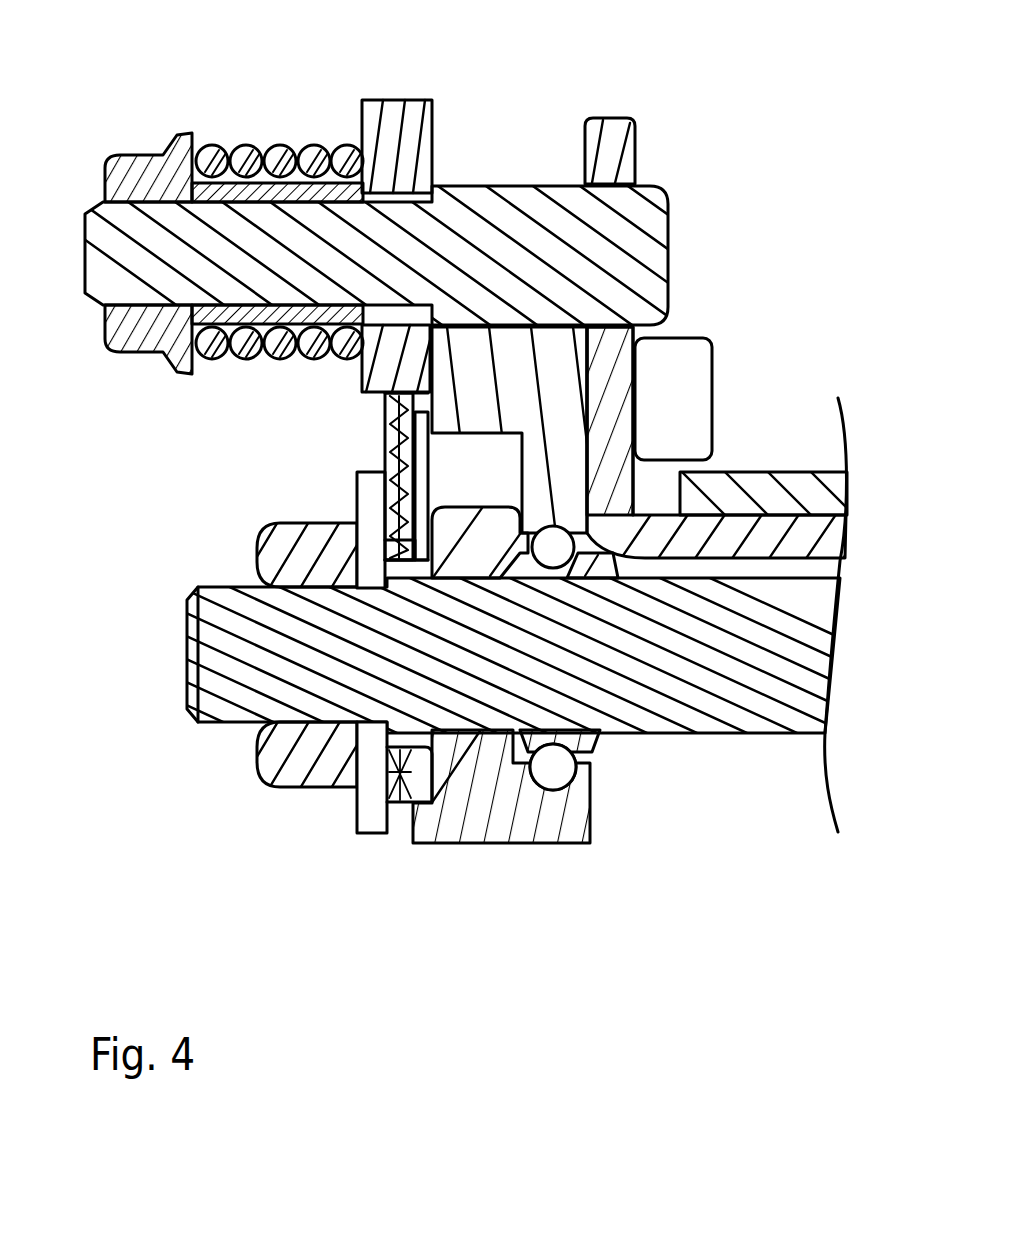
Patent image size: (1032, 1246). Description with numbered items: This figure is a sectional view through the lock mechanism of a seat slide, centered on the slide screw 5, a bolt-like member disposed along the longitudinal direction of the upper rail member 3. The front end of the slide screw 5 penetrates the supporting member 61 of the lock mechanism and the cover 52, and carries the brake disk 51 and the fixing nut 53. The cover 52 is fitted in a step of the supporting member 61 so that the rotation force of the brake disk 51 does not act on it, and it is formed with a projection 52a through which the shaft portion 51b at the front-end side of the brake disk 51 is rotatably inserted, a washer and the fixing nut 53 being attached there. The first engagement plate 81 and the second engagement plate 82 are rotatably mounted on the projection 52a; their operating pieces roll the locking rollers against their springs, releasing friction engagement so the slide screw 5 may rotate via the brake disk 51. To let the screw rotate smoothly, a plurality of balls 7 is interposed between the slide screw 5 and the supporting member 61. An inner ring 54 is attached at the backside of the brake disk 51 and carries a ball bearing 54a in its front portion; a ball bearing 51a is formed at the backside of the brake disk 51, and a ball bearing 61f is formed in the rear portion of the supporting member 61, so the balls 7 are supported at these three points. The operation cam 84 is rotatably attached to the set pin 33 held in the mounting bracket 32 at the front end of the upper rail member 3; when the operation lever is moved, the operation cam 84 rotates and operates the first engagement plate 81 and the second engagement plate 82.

The upper rail member 3 is at (767, 493).
The slide screw 5 is at (797, 706).
The balls 7 is at (560, 545).
The mounting bracket 32 is at (612, 154).
The set pin 33 is at (470, 225).
The brake disk 51 is at (463, 772).
The ball bearing 51a is at (513, 742).
The shaft portion 51b is at (390, 793).
The cover 52 is at (383, 468).
The projection 52a is at (382, 547).
The fixing nut 53 is at (290, 747).
The inner ring 54 is at (603, 582).
The ball bearing 54a is at (613, 738).
The supporting member 61 is at (555, 375).
The ball bearing 61f is at (590, 530).
The first engagement plate 81 is at (393, 433).
The second engagement plate 82 is at (387, 393).
The operation cam 84 is at (385, 130).